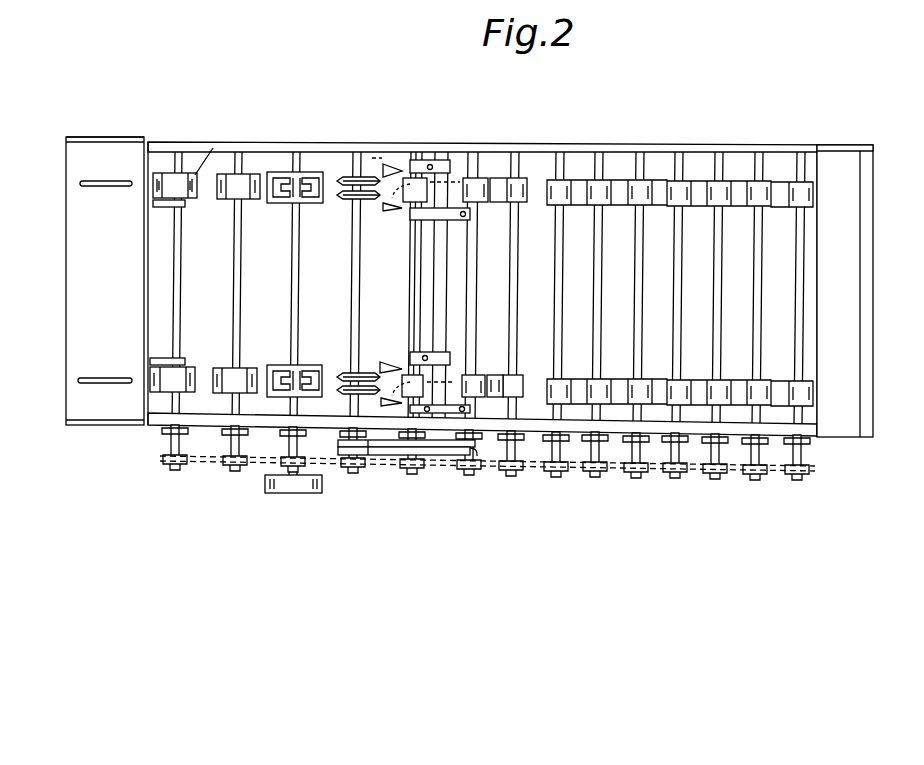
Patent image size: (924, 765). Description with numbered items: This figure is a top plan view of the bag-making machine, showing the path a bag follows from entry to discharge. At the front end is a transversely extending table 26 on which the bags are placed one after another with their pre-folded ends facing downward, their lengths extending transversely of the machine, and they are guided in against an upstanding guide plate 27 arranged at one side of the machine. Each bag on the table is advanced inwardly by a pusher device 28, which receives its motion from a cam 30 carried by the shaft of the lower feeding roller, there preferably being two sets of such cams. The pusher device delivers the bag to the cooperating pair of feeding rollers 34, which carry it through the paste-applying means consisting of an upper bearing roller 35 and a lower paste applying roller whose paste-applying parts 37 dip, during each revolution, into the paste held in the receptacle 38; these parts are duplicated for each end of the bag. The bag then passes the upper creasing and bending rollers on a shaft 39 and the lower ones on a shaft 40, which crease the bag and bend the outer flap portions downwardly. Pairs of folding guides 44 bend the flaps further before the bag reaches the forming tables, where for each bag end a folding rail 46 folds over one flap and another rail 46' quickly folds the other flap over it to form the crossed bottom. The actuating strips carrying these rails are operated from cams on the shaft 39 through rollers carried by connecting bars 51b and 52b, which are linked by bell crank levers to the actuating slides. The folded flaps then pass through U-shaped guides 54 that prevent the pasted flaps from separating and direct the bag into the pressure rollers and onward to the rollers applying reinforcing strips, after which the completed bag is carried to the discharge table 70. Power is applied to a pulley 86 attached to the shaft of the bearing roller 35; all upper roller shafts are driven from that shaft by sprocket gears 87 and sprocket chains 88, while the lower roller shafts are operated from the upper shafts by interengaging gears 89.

The table 26 is at (73, 345).
The guide plate 27 is at (95, 140).
The pusher device 28 is at (82, 381).
The cam 30 is at (222, 143).
The feeding rollers 34 is at (185, 203).
The bearing roller 35 is at (302, 186).
The paste-applying parts 37 is at (277, 177).
The receptacle 38 is at (272, 204).
The shaft 39 is at (355, 292).
The shaft 40 is at (358, 266).
The folding guides 44 is at (400, 162).
The folding rail 46 is at (459, 247).
The folding rail 46' is at (461, 374).
The connecting bar 51b is at (395, 443).
The connecting bar 52b is at (452, 452).
The U-shaped guides 54 is at (497, 375).
The discharge table 70 is at (848, 347).
The pulley 86 is at (280, 486).
The sprocket gears 87 is at (303, 458).
The sprocket chains 88 is at (577, 470).
The interengaging gears 89 is at (808, 442).